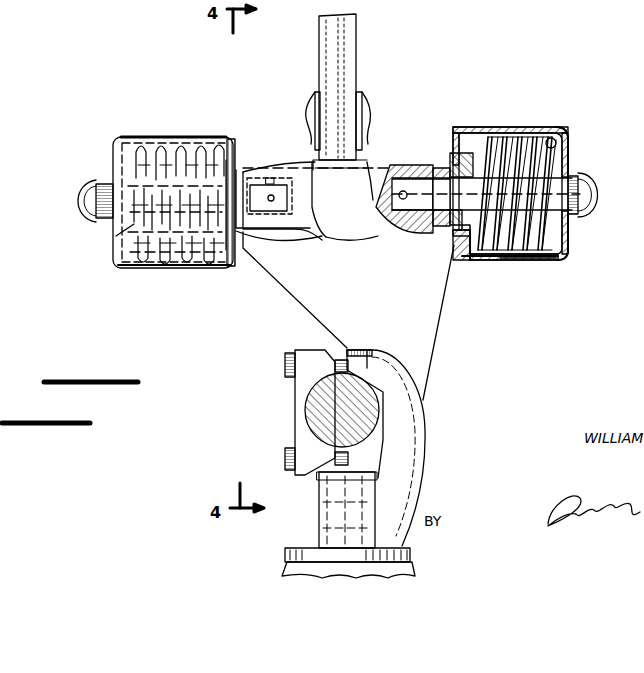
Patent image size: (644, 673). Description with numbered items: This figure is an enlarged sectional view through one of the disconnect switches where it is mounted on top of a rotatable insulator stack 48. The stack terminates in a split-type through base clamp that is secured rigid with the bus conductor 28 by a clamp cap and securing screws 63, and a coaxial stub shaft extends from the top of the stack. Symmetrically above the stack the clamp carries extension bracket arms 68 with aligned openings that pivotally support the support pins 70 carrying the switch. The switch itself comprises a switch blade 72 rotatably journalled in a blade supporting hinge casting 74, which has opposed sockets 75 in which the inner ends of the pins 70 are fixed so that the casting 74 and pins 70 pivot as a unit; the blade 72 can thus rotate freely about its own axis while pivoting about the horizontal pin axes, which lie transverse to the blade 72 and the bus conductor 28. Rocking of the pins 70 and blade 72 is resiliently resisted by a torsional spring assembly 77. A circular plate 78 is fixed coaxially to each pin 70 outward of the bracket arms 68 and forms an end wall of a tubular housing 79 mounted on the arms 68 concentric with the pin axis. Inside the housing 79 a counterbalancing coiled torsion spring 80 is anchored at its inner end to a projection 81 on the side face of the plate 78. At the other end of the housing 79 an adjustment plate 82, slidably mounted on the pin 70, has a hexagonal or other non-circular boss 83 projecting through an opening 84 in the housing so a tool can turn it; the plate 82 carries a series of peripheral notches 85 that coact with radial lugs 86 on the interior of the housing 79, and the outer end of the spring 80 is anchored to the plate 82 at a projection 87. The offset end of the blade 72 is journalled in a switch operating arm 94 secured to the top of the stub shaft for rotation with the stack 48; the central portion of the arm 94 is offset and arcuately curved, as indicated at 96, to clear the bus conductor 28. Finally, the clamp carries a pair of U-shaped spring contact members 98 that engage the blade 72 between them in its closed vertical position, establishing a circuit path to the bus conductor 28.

The bus conductor 28 is at (350, 434).
The insulator stack 48 is at (414, 562).
The securing screws 63 is at (276, 440).
The extension bracket arms 68 is at (238, 170).
The support pins 70 is at (120, 238).
The switch blade 72 is at (355, 36).
The blade supporting hinge casting 74 is at (262, 163).
The opposed sockets 75 is at (278, 168).
The torsional spring assembly 77 is at (576, 122).
The circular plate 78 is at (470, 156).
The tubular housing 79 is at (170, 140).
The counterbalancing coiled torsion spring 80 is at (138, 270).
The projection 81 is at (458, 260).
The adjustment plate 82 is at (566, 156).
The non-circular boss 83 is at (86, 204).
The opening 84 is at (570, 216).
The peripheral notches 85 is at (562, 128).
The radial lugs 86 is at (546, 260).
The projection 87 is at (551, 138).
The switch operating arm 94 is at (430, 404).
The arcuately curved central portion 96 is at (410, 356).
The U-shaped spring contact members 98 is at (310, 116).